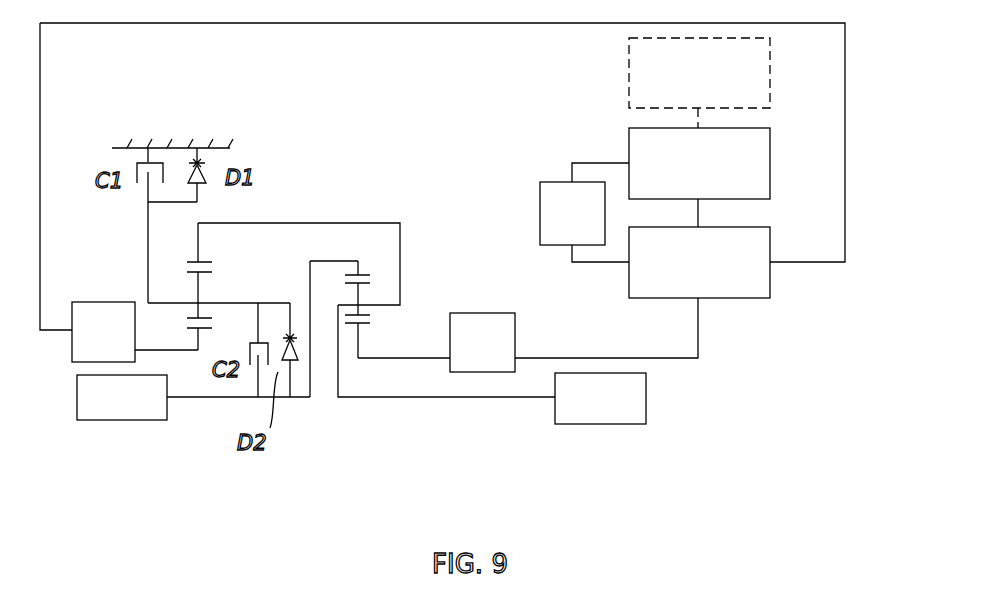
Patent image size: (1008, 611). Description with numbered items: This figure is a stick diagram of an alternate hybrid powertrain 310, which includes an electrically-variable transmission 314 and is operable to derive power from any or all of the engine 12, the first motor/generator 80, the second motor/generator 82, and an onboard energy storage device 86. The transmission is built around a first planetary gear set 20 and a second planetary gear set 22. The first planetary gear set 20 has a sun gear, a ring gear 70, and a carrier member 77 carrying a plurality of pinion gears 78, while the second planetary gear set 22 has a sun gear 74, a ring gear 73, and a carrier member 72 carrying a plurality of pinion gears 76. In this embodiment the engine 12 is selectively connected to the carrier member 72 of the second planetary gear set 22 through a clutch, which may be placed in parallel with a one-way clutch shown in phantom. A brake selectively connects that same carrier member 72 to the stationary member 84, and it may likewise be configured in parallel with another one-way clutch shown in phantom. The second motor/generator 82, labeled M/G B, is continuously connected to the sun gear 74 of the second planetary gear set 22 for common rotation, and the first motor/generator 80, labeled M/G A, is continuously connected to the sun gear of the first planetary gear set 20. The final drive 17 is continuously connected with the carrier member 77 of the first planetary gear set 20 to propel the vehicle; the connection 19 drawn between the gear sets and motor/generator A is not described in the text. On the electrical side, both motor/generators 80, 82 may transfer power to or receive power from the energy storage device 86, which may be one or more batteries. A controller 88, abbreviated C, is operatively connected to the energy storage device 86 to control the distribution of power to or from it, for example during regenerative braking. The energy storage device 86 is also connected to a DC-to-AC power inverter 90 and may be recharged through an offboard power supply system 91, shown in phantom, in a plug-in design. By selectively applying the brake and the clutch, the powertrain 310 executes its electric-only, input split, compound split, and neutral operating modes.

The powertrain 310 is at (866, 106).
The stationary member 84 is at (168, 145).
The second motor/generator 82 is at (90, 301).
The ring gear 70 is at (359, 261).
The first planetary gear set 20 is at (428, 247).
The ring gear 73 is at (213, 263).
The pinion gears 76 is at (203, 298).
The carrier member 72 is at (214, 306).
The sun gear 74 is at (186, 329).
The pinion gears 78 is at (375, 294).
The carrier member 77 is at (376, 306).
The electrical connection 19 is at (405, 358).
The first motor/generator 80 is at (483, 313).
The engine 12 is at (130, 420).
The second planetary gear set 22 is at (212, 399).
The electrically-variable transmission 314 is at (322, 420).
The final drive 17 is at (646, 405).
The controller 88 is at (547, 181).
The energy storage device 86 is at (770, 148).
The offboard power supply system 91 is at (628, 68).
The DC-to-AC power inverter 90 is at (770, 248).